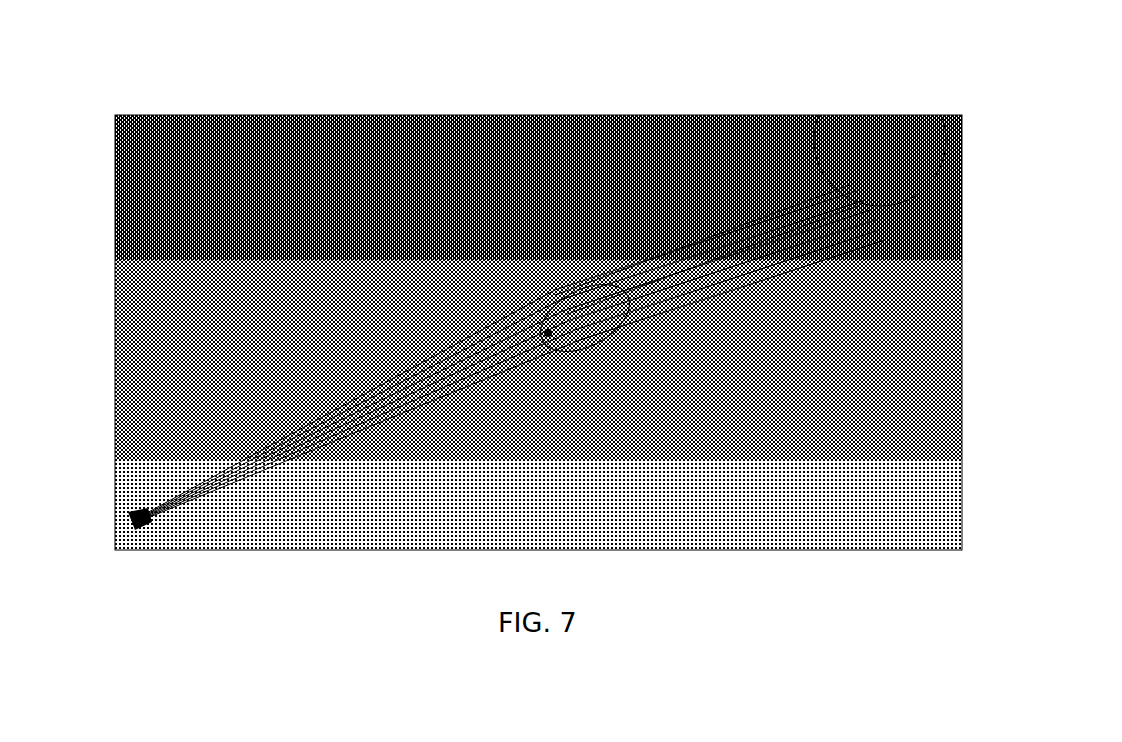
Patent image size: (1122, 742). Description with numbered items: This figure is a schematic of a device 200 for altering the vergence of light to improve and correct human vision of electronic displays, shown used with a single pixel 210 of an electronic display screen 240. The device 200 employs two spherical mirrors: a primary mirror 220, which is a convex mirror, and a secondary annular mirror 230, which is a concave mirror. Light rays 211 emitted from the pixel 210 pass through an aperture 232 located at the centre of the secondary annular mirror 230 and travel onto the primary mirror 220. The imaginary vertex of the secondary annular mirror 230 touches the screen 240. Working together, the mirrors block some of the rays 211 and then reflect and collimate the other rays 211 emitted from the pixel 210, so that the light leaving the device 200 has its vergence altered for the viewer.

The device 200 is at (305, 125).
The pixel 210 is at (128, 510).
The rays 211 is at (250, 465).
The primary mirror 220 is at (625, 285).
The secondary annular mirror 230 is at (530, 310).
The aperture 232 is at (530, 331).
The screen 240 is at (820, 127).